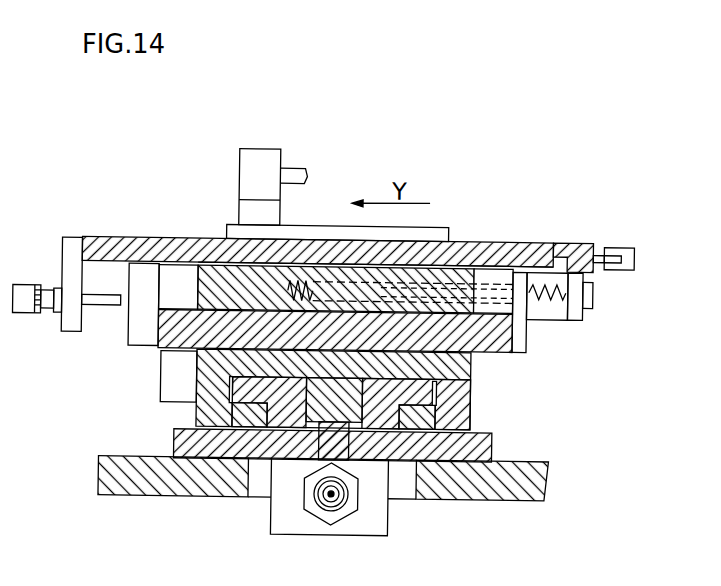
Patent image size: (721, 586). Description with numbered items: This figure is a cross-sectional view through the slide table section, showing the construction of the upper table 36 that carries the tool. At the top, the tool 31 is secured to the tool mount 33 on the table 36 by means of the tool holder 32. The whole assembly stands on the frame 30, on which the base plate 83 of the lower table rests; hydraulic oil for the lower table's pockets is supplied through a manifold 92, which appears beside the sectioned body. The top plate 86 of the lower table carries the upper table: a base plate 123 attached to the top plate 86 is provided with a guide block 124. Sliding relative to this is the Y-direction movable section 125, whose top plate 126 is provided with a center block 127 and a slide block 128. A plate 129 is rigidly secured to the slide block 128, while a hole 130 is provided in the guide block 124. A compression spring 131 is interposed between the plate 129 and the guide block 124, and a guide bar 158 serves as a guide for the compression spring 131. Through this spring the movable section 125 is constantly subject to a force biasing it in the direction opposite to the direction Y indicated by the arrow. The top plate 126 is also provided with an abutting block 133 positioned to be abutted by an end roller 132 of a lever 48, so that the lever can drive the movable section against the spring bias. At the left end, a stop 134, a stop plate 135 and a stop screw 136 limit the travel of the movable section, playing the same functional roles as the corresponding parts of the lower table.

The frame 30 is at (124, 486).
The tool 31 is at (294, 176).
The tool holder 32 is at (256, 159).
The tool mount 33 is at (312, 230).
The table 36 is at (128, 240).
The lever 48 is at (632, 248).
The base plate 83 is at (210, 452).
The top plate 86 is at (452, 370).
The manifold 92 is at (172, 386).
The base plate 123 is at (430, 341).
The guide block 124 is at (177, 284).
The Y-direction movable section 125 is at (506, 242).
The top plate 126 is at (204, 254).
The center block 127 is at (234, 290).
The slide block 128 is at (102, 273).
The plate 129 is at (574, 310).
The hole 130 is at (405, 271).
The compression spring 131 is at (309, 286).
The end roller 132 is at (604, 248).
The abutting block 133 is at (568, 244).
The stop 134 is at (138, 335).
The stop plate 135 is at (72, 331).
The stop screw 136 is at (26, 312).
The guide bar 158 is at (586, 292).